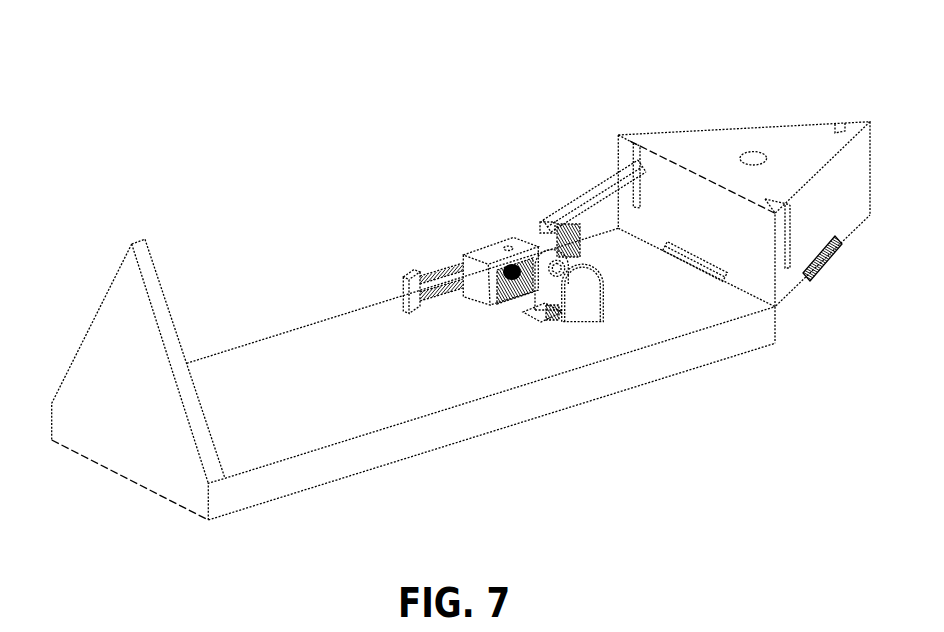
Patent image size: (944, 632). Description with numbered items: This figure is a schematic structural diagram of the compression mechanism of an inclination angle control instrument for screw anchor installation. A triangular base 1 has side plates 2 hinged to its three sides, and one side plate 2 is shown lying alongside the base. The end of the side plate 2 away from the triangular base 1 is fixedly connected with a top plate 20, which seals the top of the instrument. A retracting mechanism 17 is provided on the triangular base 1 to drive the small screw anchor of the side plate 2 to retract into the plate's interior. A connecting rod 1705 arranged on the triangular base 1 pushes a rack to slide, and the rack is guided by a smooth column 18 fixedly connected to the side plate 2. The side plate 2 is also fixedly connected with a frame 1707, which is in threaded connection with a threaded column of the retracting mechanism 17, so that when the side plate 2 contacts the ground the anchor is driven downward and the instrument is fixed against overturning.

The triangular base 1 is at (792, 162).
The side plate 2 is at (412, 397).
The retracting mechanism 17 is at (545, 237).
The smooth column 18 is at (410, 275).
The top plate 20 is at (125, 303).
The connecting rod 1705 is at (595, 193).
The frame 1707 is at (475, 258).